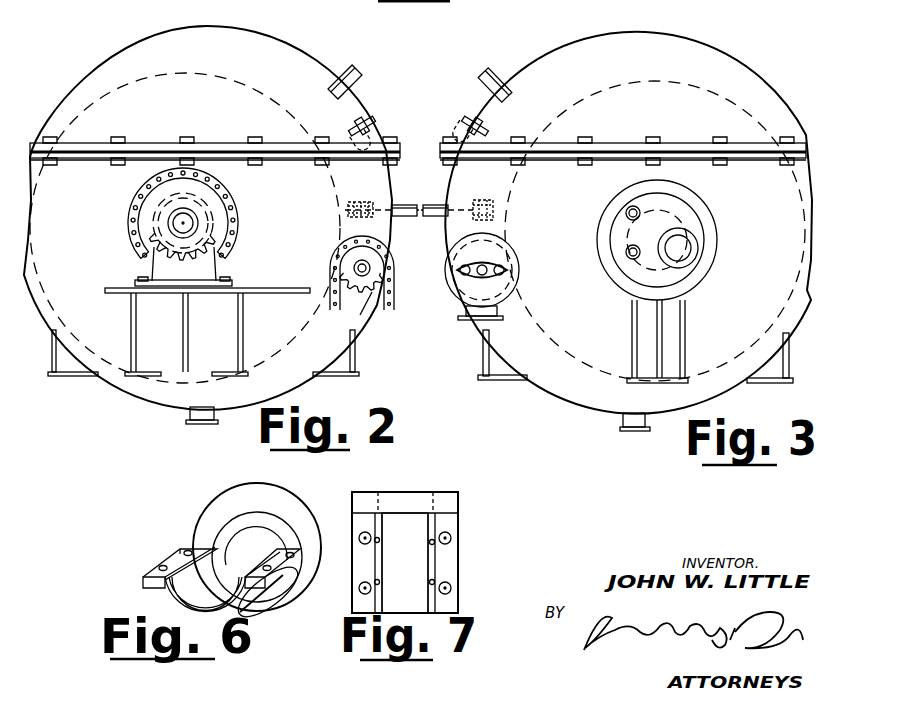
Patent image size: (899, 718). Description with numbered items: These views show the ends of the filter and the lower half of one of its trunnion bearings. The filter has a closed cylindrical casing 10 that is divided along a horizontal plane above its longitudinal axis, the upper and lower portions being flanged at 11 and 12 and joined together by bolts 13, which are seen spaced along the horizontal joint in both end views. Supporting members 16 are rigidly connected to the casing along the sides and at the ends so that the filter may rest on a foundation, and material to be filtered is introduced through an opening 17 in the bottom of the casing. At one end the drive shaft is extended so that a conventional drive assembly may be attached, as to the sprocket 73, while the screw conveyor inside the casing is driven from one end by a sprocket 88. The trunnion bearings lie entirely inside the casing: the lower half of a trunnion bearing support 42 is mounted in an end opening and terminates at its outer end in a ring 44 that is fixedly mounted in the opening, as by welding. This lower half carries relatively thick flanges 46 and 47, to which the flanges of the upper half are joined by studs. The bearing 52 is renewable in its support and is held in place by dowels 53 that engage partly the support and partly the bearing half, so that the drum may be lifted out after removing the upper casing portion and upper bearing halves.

In FIG. 2, the casing 10 is at (95, 62).
In FIG. 3, the casing 10 is at (578, 50).
In FIG. 2, the flange 11 is at (100, 128).
In FIG. 3, the flange 11 is at (758, 134).
In FIG. 2, the flange 12 is at (86, 157).
In FIG. 3, the flange 12 is at (770, 162).
In FIG. 2, the bolts 13 is at (188, 143).
In FIG. 3, the bolts 13 is at (588, 145).
In FIG. 2, the supporting members 16 is at (70, 376).
In FIG. 3, the supporting members 16 is at (688, 340).
In FIG. 3, the opening 17 is at (622, 423).
In FIG. 2, the sprocket 73 is at (222, 226).
In FIG. 2, the sprocket 88 is at (388, 265).
In FIG. 6, the trunnion bearing support 42 is at (157, 605).
In FIG. 7, the trunnion bearing support 42 is at (460, 526).
In FIG. 6, the ring 44 is at (305, 504).
In FIG. 6, the flange 46 is at (155, 574).
In FIG. 6, the flange 47 is at (280, 585).
In FIG. 7, the bearing 52 is at (404, 530).
In FIG. 7, the dowels 53 is at (434, 582).